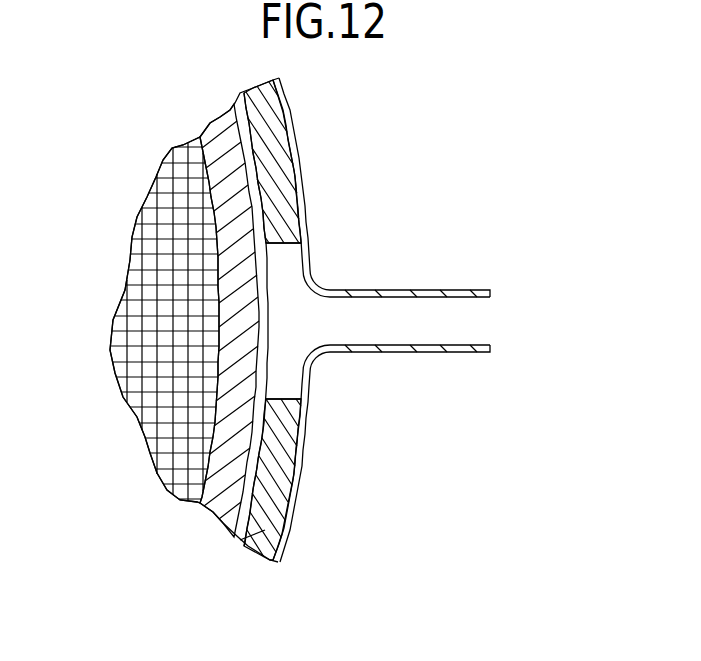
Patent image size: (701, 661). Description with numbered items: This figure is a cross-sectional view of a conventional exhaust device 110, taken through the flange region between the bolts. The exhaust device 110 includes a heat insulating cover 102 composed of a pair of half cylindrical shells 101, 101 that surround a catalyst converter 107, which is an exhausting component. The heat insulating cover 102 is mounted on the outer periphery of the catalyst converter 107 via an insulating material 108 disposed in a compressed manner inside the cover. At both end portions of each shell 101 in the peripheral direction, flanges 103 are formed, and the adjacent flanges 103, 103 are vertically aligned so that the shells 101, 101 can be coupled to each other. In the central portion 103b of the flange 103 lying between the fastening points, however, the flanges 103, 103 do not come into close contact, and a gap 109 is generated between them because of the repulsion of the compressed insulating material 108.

The half cylindrical shell 101 is at (295, 152).
The heat insulating cover 102 is at (317, 262).
The flange 103 is at (441, 324).
The central portion of the flange 103b is at (365, 290).
The catalyst converter 107 is at (145, 393).
The insulating material 108 is at (240, 540).
The gap 109 is at (482, 317).
The exhaust device 110 is at (294, 337).